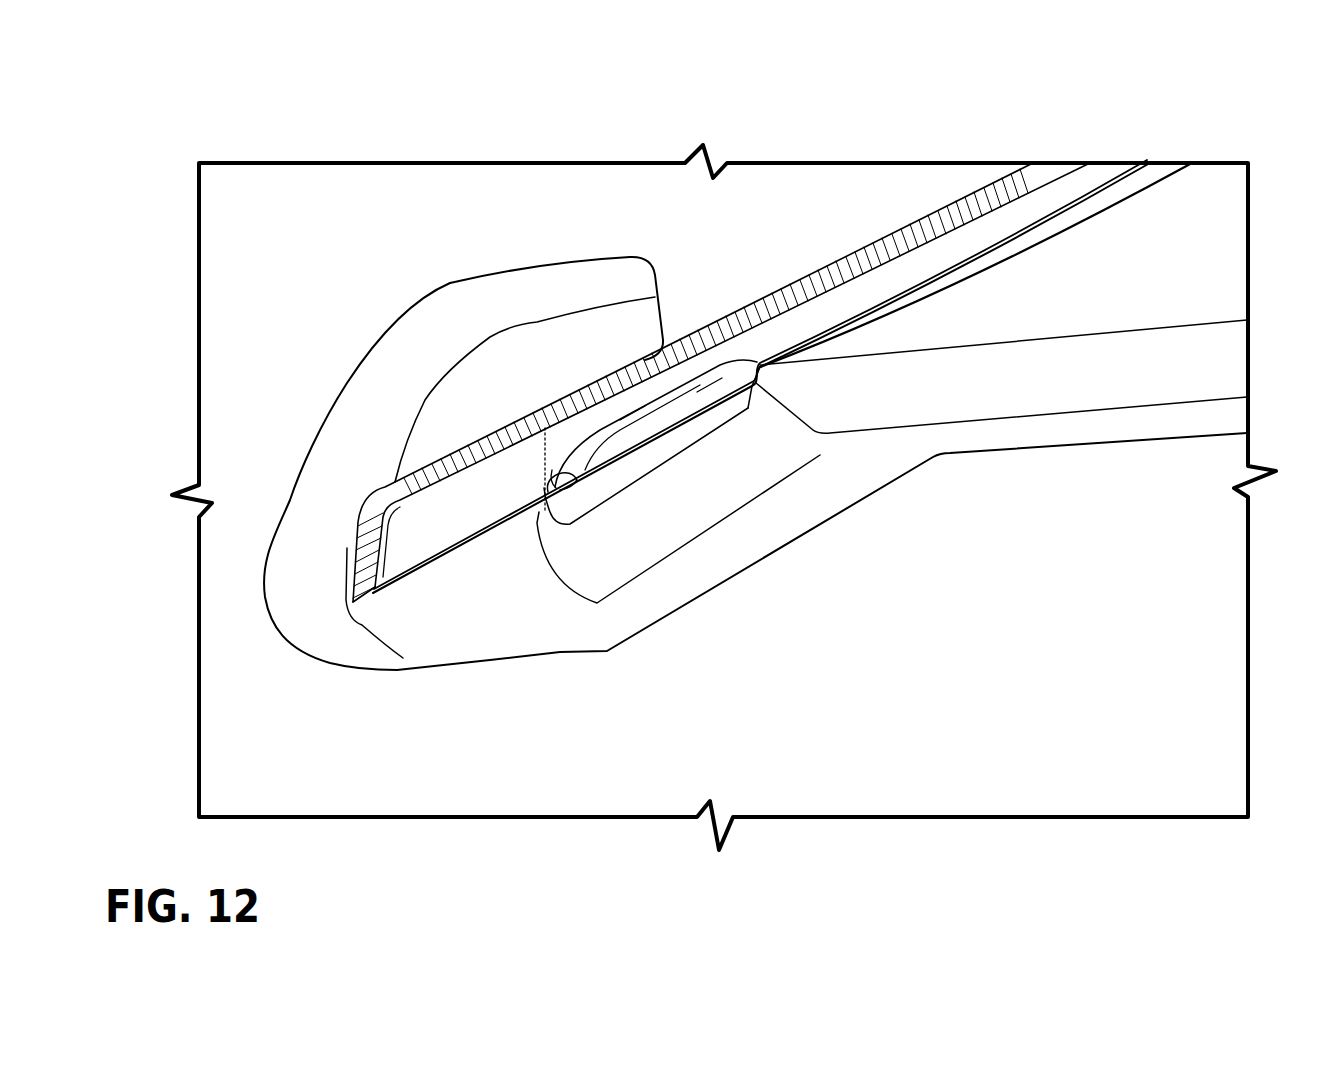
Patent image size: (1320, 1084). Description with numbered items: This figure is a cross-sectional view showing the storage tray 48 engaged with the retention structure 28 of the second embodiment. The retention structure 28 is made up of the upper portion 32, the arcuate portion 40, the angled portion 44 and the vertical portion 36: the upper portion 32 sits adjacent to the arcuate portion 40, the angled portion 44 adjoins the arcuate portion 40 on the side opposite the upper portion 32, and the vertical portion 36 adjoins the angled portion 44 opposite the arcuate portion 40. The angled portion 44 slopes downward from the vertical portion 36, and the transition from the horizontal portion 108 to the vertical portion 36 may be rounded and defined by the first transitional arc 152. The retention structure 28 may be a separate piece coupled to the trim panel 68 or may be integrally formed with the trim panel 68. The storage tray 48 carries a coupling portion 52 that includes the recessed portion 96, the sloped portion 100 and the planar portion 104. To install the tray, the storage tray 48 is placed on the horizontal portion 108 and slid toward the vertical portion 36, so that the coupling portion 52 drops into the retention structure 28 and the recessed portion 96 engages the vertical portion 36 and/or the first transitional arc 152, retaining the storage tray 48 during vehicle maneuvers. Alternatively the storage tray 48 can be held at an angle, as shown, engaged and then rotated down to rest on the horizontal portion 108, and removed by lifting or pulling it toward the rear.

The retention structure 28 is at (268, 630).
The upper portion 32 is at (563, 350).
The vertical portion 36 is at (795, 435).
The arcuate portion 40 is at (470, 433).
The angled portion 44 is at (705, 597).
The storage tray 48 is at (1090, 186).
The coupling portion 52 is at (646, 421).
The trim panel 68 is at (1190, 225).
The recessed portion 96 is at (700, 378).
The sloped portion 100 is at (563, 392).
The planar portion 104 is at (677, 433).
The horizontal portion 108 is at (1162, 350).
The first transitional arc 152 is at (753, 373).